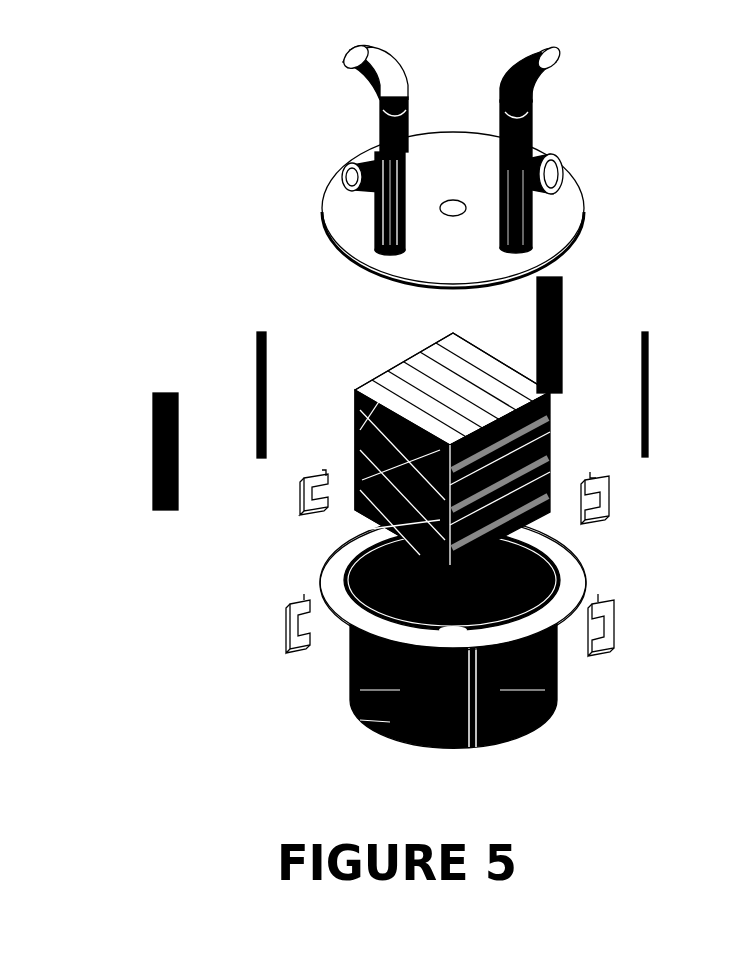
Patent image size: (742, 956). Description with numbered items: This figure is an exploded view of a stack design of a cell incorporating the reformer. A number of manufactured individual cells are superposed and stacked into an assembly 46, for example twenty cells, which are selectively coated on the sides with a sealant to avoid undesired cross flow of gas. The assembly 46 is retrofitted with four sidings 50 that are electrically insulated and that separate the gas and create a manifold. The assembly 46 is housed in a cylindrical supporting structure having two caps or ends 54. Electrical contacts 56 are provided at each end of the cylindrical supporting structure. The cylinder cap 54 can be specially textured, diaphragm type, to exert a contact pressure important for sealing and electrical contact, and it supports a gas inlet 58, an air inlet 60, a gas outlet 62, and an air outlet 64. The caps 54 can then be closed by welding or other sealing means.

The assembly 46 is at (362, 352).
The sidings 50 is at (153, 436).
The cap 54 is at (476, 264).
The electrical contacts 56 is at (415, 820).
The gas inlet 58 is at (547, 162).
The air inlet 60 is at (365, 168).
The gas outlet 62 is at (358, 70).
The air outlet 64 is at (545, 63).